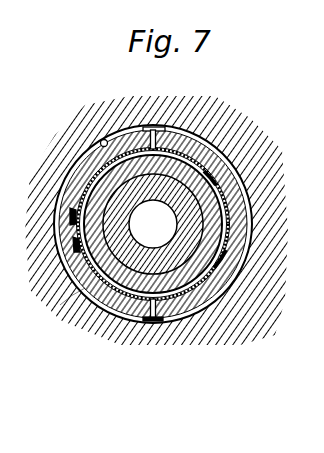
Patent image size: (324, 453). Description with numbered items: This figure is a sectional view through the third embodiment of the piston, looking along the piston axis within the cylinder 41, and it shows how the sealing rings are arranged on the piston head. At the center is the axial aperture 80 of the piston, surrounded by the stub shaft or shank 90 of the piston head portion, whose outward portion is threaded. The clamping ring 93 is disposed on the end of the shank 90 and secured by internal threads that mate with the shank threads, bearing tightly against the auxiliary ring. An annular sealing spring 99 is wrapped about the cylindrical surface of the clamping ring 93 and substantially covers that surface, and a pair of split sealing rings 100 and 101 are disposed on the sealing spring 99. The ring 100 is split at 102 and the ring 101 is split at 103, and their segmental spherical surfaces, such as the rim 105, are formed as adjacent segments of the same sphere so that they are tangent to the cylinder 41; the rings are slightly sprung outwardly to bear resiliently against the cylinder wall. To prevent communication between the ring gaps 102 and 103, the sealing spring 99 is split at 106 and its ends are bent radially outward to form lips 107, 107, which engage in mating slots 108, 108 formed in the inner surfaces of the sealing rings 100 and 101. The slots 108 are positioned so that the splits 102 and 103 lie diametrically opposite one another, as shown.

The cylinder 41 is at (102, 140).
The axial aperture 80 is at (170, 207).
The stub shaft or shank 90 is at (190, 230).
The clamping ring 93 is at (200, 260).
The annular sealing spring 99 is at (228, 163).
The split sealing ring 100 is at (218, 283).
The split sealing ring 101 is at (200, 153).
The ring split 102 is at (150, 323).
The ring split 103 is at (177, 122).
The segmental spherical surface or rim 105 is at (103, 225).
The sealing spring split 106 is at (58, 219).
The lip 107 is at (67, 220).
The slot 108 is at (66, 290).